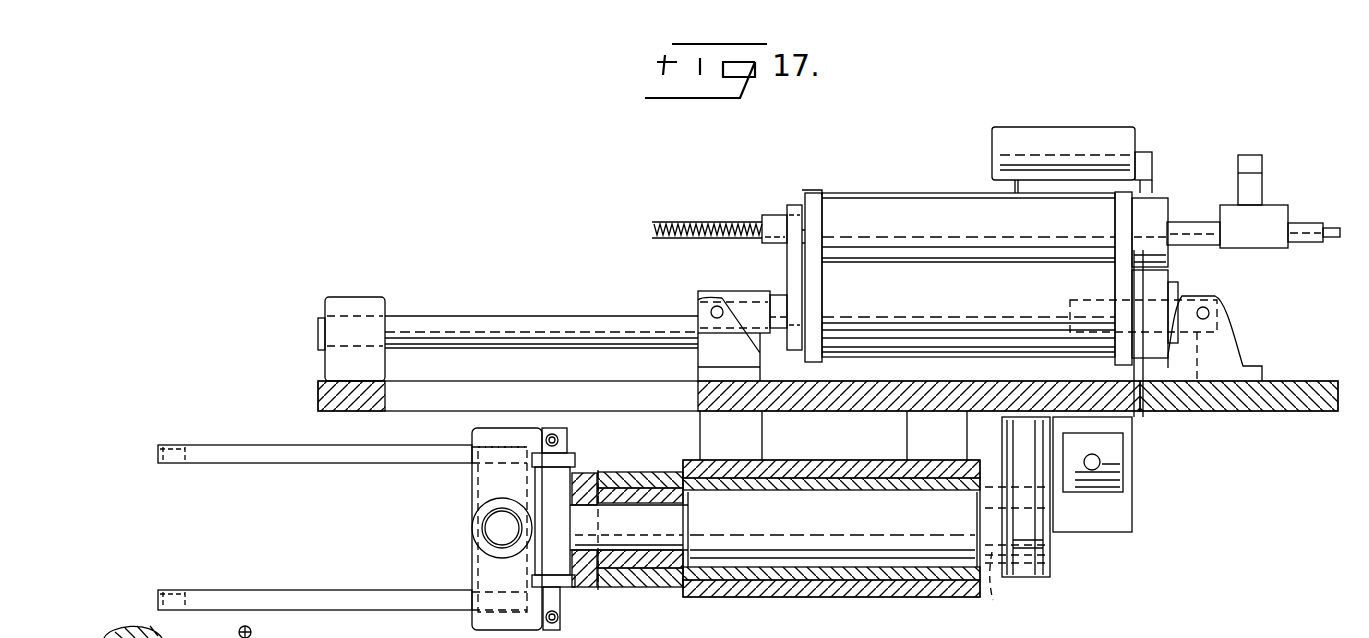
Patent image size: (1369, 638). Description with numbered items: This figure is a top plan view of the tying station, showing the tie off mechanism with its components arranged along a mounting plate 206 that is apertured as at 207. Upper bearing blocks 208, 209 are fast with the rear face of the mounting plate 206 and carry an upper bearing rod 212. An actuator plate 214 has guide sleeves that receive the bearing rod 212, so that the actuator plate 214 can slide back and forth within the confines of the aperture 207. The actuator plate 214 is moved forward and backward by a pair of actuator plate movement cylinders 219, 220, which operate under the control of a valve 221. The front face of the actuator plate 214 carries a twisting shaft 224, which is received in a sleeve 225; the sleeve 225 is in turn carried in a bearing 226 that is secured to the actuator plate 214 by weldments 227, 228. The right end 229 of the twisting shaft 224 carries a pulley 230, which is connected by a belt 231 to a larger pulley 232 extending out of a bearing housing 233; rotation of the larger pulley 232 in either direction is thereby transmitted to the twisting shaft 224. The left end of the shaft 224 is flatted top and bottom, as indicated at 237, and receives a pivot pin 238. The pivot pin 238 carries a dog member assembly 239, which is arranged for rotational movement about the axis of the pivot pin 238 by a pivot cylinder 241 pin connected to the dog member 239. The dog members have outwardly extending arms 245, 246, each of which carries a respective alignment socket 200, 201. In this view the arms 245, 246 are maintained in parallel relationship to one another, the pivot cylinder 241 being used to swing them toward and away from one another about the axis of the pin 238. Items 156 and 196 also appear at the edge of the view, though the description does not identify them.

The chuck 156 is at (117, 637).
The screw 196 is at (253, 627).
The alignment socket 200 is at (177, 465).
The alignment socket 201 is at (173, 588).
The mounting plate 206 is at (1287, 403).
The aperture 207 is at (1138, 417).
The upper bearing block 208 is at (362, 302).
The upper bearing block 209 is at (1197, 360).
The upper bearing rod 212 is at (572, 293).
The actuator plate 214 is at (716, 400).
The actuator plate movement cylinder 219 is at (907, 172).
The actuator plate movement cylinder 220 is at (837, 282).
The valve 221 is at (1070, 137).
The twisting shaft 224 is at (928, 552).
The sleeve 225 is at (893, 573).
The bearing 226 is at (818, 593).
The weldment 227 is at (747, 442).
The weldment 228 is at (918, 435).
The right end of shaft 229 is at (1020, 586).
The pulley 230 is at (1047, 577).
The belt 231 is at (1035, 543).
The larger pulley 232 is at (1045, 463).
The bearing housing 233 is at (1133, 500).
The flatted portion 237 is at (642, 535).
The pivot pin 238 is at (480, 533).
The dog member assembly 239 is at (485, 485).
The pivot cylinder 241 is at (557, 492).
The arm 245 is at (348, 462).
The arm 246 is at (335, 570).